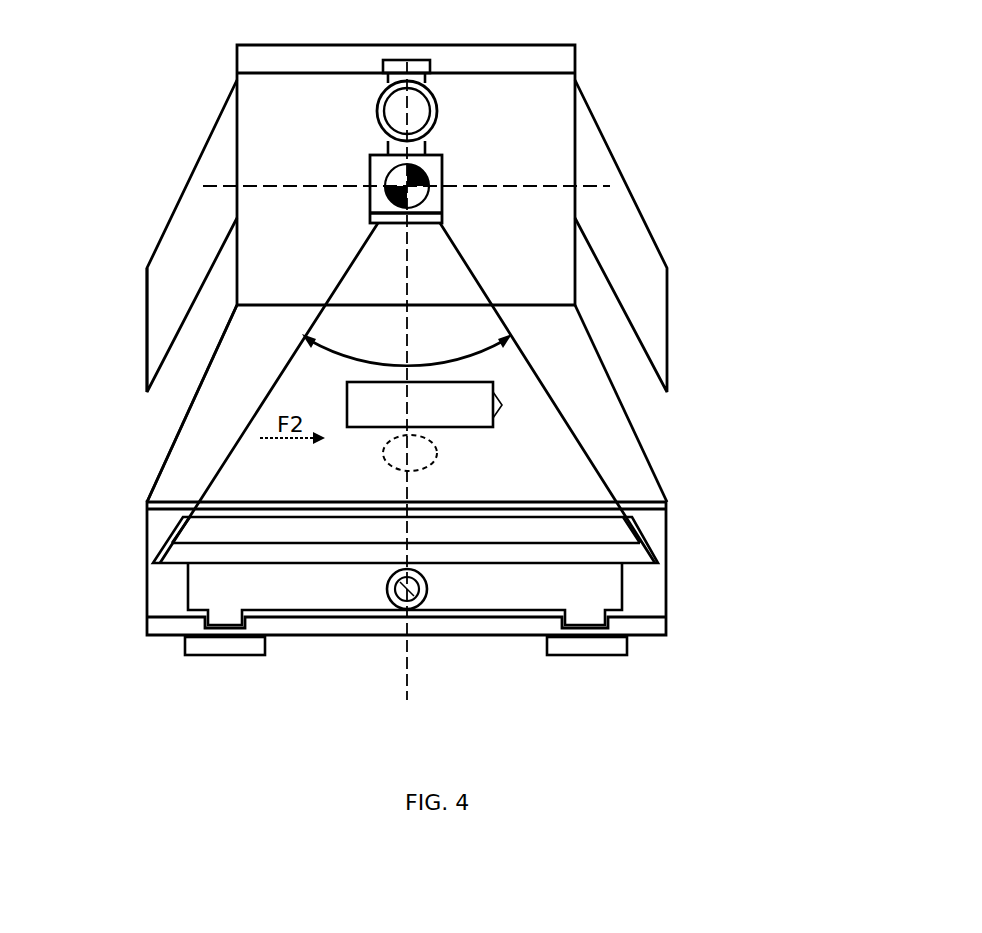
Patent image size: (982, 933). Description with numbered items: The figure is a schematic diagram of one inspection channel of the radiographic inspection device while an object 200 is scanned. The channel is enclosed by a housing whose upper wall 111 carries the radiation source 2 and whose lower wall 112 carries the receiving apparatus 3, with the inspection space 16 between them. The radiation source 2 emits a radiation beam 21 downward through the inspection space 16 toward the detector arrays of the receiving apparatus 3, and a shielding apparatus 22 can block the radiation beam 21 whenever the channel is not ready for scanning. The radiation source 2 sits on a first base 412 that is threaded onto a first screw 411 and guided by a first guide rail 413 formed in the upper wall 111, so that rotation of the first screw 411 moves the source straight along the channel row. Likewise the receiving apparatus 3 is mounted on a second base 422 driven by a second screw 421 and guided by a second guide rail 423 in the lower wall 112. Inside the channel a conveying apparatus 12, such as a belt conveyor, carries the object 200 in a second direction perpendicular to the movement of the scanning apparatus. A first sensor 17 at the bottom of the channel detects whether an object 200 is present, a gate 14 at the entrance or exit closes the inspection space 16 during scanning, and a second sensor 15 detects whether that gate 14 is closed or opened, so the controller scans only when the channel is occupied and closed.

The upper wall 111 is at (313, 63).
The lower wall 112 is at (652, 583).
The radiation source 2 is at (451, 130).
The receiving apparatus 3 is at (247, 558).
The conveying apparatus 12 is at (243, 400).
The gate 14 is at (167, 262).
The second sensor 15 is at (237, 267).
The inspection space 16 is at (293, 266).
The first sensor 17 is at (420, 457).
The radiation beam 21 is at (510, 353).
The shielding apparatus 22 is at (441, 212).
The object 200 is at (500, 402).
The first screw 411 is at (431, 103).
The first base 412 is at (441, 167).
The first guide rail 413 is at (428, 62).
The second screw 421 is at (404, 585).
The second base 422 is at (323, 592).
The second guide rail 423 is at (242, 628).